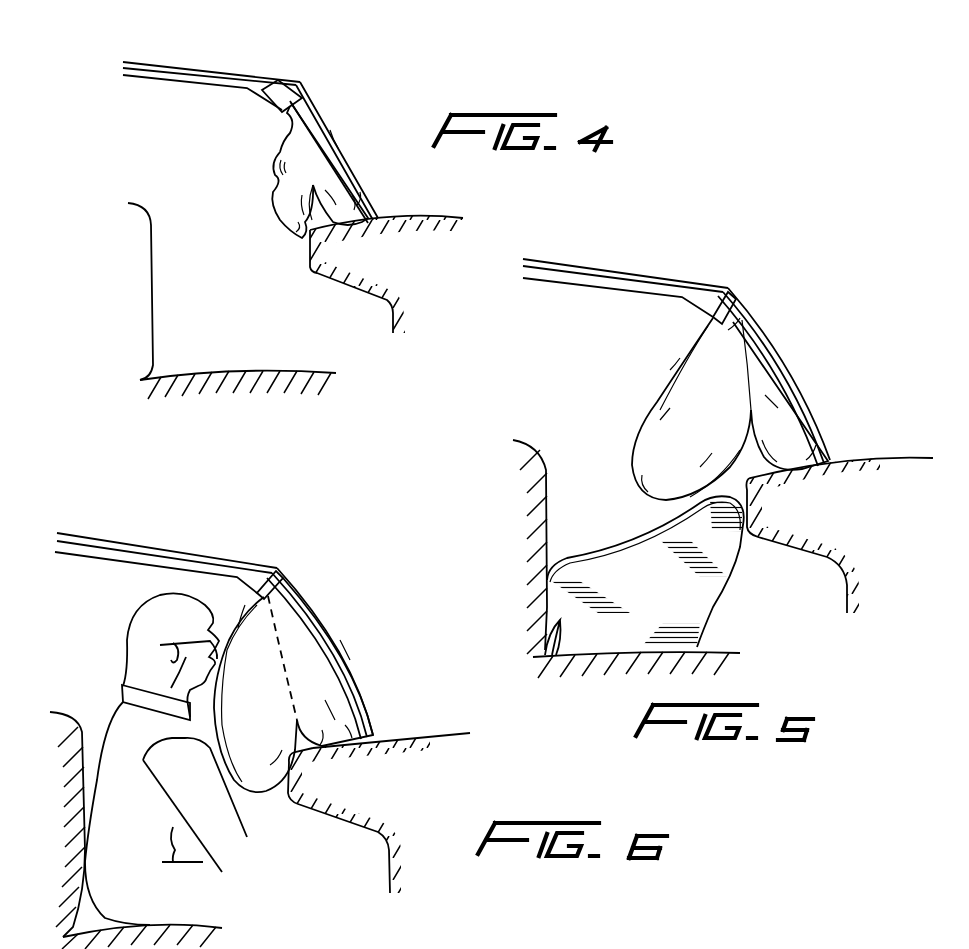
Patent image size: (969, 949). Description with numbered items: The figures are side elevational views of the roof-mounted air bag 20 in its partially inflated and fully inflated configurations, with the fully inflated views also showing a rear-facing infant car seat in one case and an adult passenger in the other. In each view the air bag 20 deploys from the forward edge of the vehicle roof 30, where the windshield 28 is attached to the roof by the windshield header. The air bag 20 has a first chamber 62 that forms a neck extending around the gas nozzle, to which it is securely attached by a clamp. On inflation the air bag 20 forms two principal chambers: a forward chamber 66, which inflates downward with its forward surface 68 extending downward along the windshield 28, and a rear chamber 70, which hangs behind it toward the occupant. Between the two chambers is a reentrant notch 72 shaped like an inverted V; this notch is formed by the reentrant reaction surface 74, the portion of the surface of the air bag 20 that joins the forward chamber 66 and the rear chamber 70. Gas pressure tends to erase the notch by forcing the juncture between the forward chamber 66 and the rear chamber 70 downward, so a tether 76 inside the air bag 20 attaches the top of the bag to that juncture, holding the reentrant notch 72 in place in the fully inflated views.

In FIG. 4, the air bag 20 is at (281, 143).
In FIG. 5, the air bag 20 is at (684, 364).
In FIG. 6, the air bag 20 is at (237, 631).
In FIG. 4, the windshield 28 is at (327, 107).
In FIG. 4, the vehicle roof 30 is at (205, 73).
In FIG. 5, the vehicle roof 30 is at (600, 266).
In FIG. 5, the first chamber 62 is at (745, 292).
In FIG. 4, the forward chamber 66 is at (340, 183).
In FIG. 5, the forward chamber 66 is at (767, 393).
In FIG. 6, the forward chamber 66 is at (317, 693).
In FIG. 4, the forward surface 68 is at (330, 140).
In FIG. 5, the forward surface 68 is at (757, 323).
In FIG. 6, the forward surface 68 is at (327, 637).
In FIG. 4, the rear chamber 70 is at (273, 176).
In FIG. 5, the rear chamber 70 is at (666, 440).
In FIG. 6, the rear chamber 70 is at (257, 683).
In FIG. 5, the reentrant notch 72 is at (753, 473).
In FIG. 6, the reentrant notch 72 is at (313, 748).
In FIG. 6, the reentrant reaction surface 74 is at (315, 812).
In FIG. 6, the tether 76 is at (284, 621).